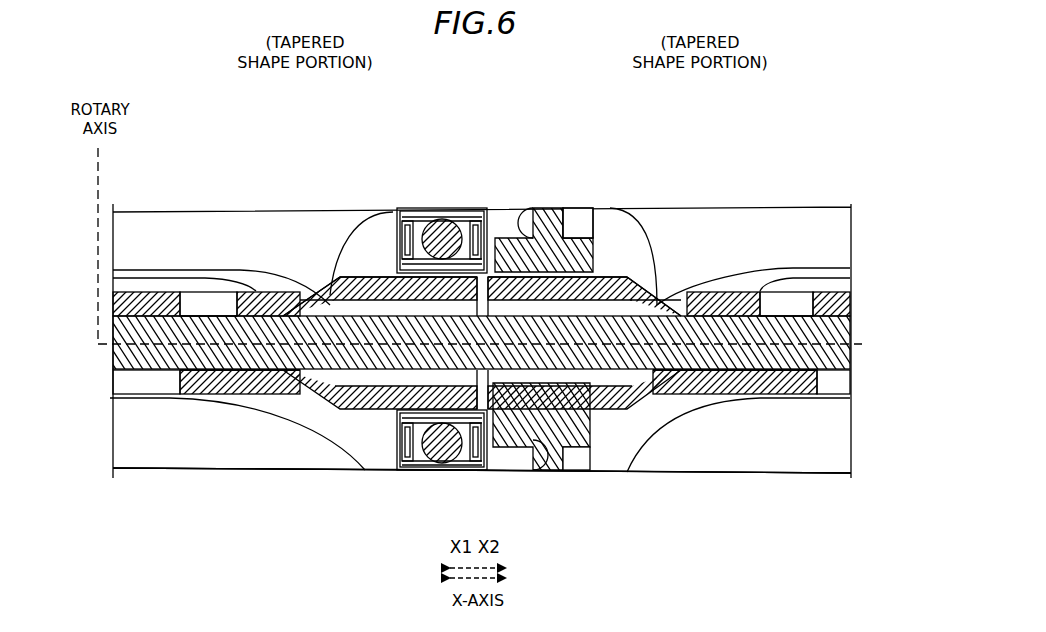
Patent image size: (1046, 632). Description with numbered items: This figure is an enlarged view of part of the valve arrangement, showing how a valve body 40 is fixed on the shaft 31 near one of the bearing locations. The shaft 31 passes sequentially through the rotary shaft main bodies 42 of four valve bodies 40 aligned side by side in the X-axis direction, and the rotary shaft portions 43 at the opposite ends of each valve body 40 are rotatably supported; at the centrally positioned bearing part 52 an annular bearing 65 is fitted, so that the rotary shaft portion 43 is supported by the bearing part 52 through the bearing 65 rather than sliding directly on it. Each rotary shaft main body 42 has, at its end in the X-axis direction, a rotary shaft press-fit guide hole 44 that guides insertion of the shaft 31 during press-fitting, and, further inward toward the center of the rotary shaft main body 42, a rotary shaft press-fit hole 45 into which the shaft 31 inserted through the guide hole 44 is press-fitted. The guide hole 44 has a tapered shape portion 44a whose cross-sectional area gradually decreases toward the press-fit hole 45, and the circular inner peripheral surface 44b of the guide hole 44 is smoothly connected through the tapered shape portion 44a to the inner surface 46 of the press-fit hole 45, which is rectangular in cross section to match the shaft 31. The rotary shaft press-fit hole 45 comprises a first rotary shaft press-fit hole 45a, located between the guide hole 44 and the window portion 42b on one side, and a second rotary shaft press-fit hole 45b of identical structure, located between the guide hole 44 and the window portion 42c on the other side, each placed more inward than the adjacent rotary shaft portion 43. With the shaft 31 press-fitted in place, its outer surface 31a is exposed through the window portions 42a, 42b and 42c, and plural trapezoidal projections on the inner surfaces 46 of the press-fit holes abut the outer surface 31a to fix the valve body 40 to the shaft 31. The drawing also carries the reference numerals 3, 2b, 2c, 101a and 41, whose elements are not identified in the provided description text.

The motor 3 is at (858, 126).
The housing portion 2b is at (660, 447).
The housing portion 2c is at (135, 450).
The housing wall 101a is at (482, 470).
The shaft 31 is at (135, 333).
The outer surface 31a is at (212, 316).
The valve body 40 is at (160, 264).
The rotor yoke 41 is at (282, 288).
The rotary shaft main body 42 is at (373, 420).
The window portion 42a is at (175, 382).
The window portion 42b is at (227, 300).
The window portion 42c is at (777, 292).
The rotary shaft portion 43 is at (393, 212).
The rotary shaft press-fit guide hole 44 is at (388, 303).
The tapered shape portion 44a is at (322, 290).
The inner peripheral surface 44b is at (420, 303).
The rotary shaft press-fit hole 45 is at (263, 291).
The first rotary shaft press-fit hole 45a is at (263, 372).
The second rotary shaft press-fit hole 45b is at (726, 372).
The inner surface 46 is at (218, 372).
The bearing part 52 is at (540, 215).
The bearing 65 is at (477, 213).